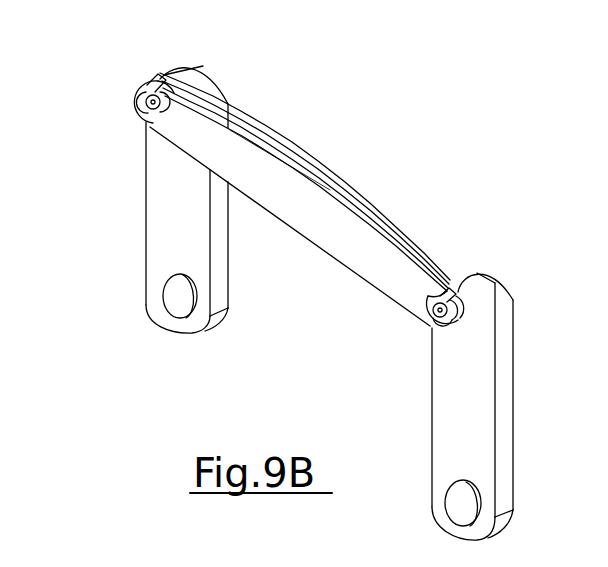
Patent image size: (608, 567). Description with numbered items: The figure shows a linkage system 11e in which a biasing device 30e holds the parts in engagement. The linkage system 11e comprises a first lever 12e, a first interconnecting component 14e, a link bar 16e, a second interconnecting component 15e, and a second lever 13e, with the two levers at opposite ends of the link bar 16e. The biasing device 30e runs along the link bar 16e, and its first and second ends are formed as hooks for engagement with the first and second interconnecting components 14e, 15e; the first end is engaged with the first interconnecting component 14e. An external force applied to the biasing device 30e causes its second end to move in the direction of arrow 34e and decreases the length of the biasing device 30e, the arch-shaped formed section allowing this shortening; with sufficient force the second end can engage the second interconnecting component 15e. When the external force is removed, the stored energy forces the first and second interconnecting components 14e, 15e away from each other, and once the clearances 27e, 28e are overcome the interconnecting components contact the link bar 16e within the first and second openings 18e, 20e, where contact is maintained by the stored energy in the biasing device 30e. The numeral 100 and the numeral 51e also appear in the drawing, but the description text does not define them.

The tool apparatus 100 is at (472, 99).
The linkage system 11e is at (337, 154).
The first lever 12e is at (140, 251).
The second lever 13e is at (426, 428).
The first interconnecting component 14e is at (146, 103).
The second interconnecting component 15e is at (422, 325).
The link bar 16e is at (412, 228).
The first opening 18e is at (134, 92).
The second opening 20e is at (454, 331).
The clearance 27e is at (141, 83).
The clearance 28e is at (464, 317).
The biasing device 30e is at (356, 220).
The arrow 34e is at (474, 305).
The fastener 51e is at (150, 80).